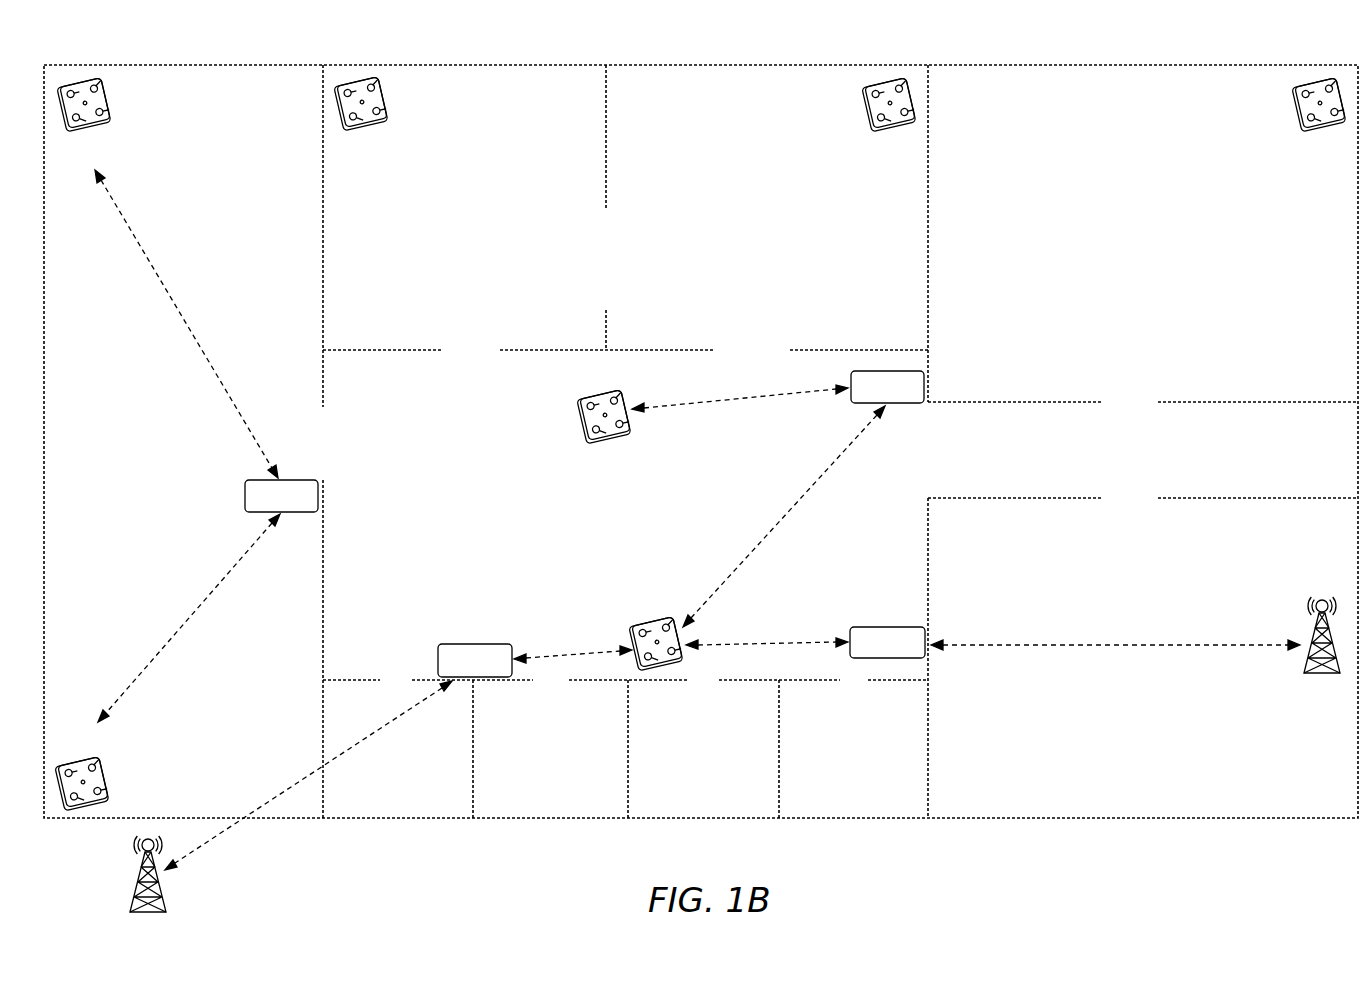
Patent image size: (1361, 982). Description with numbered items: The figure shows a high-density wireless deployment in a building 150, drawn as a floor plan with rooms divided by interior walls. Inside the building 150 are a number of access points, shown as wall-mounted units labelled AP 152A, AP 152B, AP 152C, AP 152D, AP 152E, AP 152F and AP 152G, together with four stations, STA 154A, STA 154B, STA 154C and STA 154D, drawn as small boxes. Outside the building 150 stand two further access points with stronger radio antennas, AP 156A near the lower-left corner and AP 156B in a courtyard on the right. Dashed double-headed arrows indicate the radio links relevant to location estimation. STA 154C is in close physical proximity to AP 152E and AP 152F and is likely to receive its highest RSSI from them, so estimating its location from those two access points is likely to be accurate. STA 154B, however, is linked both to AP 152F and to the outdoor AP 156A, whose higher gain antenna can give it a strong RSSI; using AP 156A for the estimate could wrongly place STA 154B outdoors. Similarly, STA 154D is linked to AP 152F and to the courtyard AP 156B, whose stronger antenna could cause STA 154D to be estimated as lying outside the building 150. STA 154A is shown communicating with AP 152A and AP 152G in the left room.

The building 150 is at (1006, 45).
The AP 152A is at (81, 123).
The AP 152B is at (363, 124).
The AP 152C is at (891, 125).
The AP 152D is at (1320, 122).
The AP 152E is at (605, 401).
The AP 152F is at (656, 629).
The wireless device 152G is at (85, 767).
The STA 154A is at (281, 496).
The STA 154B is at (475, 660).
The STA 154C is at (887, 387).
The STA 154D is at (887, 642).
The AP 156A is at (116, 874).
The AP 156B is at (1320, 652).